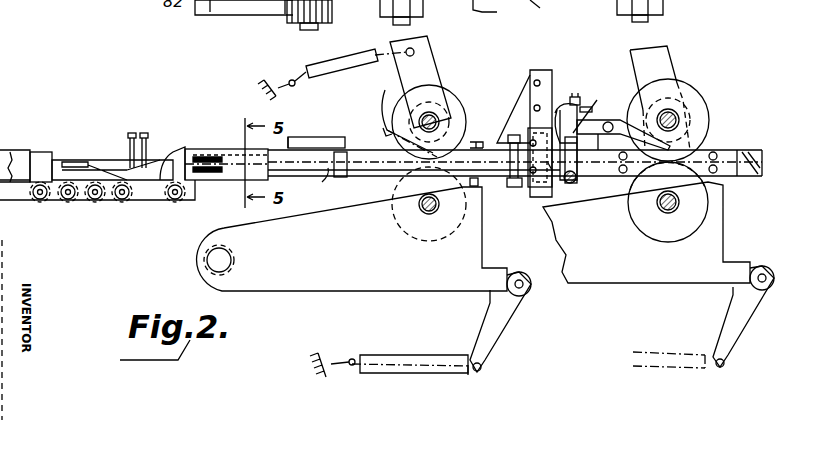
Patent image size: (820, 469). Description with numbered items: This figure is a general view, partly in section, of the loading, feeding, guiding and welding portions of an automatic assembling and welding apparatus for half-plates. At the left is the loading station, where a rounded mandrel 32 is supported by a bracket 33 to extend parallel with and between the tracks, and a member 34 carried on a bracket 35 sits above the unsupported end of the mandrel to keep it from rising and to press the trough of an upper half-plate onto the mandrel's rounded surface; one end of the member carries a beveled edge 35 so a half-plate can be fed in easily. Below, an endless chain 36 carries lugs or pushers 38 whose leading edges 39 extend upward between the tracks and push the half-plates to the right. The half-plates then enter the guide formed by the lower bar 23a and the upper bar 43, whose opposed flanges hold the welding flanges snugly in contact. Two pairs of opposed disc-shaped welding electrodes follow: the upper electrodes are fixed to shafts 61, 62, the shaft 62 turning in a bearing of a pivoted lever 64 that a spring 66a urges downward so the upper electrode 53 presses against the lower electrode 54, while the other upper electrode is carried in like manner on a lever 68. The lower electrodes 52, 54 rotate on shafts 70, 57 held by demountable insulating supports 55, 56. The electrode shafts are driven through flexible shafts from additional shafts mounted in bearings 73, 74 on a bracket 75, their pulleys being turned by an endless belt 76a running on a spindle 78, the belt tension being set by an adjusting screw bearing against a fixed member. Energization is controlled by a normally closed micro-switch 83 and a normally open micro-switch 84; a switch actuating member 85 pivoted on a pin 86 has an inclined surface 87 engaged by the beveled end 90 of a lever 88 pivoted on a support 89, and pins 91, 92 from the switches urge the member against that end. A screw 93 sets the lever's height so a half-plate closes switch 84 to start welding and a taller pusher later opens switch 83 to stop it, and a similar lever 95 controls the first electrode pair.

The lower bar 23a is at (343, 173).
The mandrel 32 is at (155, 160).
The bracket 33 is at (127, 143).
The member 34 is at (307, 143).
The beveled edge 35 is at (289, 136).
The endless chain 36 is at (70, 195).
The lug or pusher 38 is at (38, 160).
The leading edge 39 is at (58, 160).
The upper bar 43 is at (348, 150).
The lower welding electrode 52 is at (387, 230).
The upper welding electrode 53 is at (693, 97).
The lower welding electrode 54 is at (683, 240).
The support 55 is at (383, 287).
The support 56 is at (623, 287).
The shaft 57 is at (657, 207).
The shaft 61 is at (432, 120).
The shaft 62 is at (676, 118).
The lever 64 is at (670, 63).
The spring 66a is at (330, 65).
The lever 68 is at (393, 41).
The shaft 70 is at (420, 202).
The bearing 73 is at (420, 13).
The bearing 74 is at (662, 7).
The bracket 75 is at (488, 13).
The endless belt 76a is at (548, 12).
The spindle 78 is at (273, 0).
The micro-switch 83 is at (530, 75).
The micro-switch 84 is at (527, 133).
The switch actuating member 85 is at (557, 123).
The pin 86 is at (570, 187).
The inclined surface 87 is at (595, 109).
The lever 88 is at (648, 72).
The support 89 is at (607, 140).
The beveled end 90 is at (590, 124).
The pin 91 is at (560, 110).
The pin 92 is at (550, 163).
The screw 93 is at (573, 97).
The lever 95 is at (383, 128).